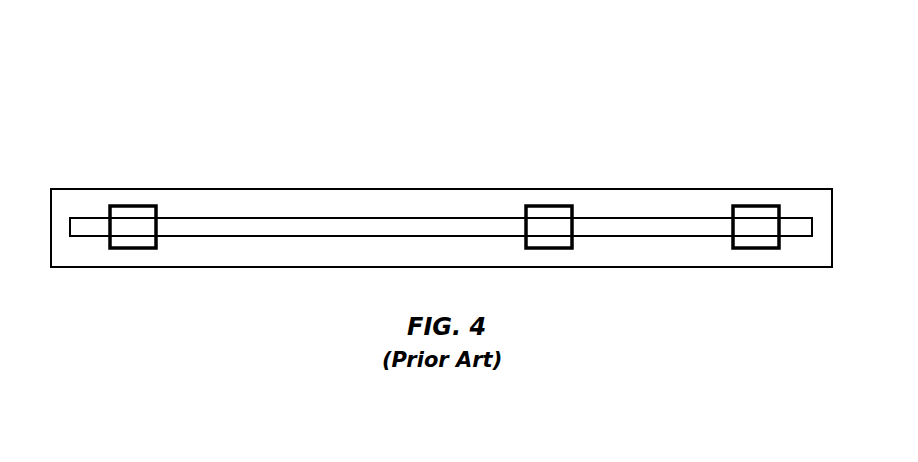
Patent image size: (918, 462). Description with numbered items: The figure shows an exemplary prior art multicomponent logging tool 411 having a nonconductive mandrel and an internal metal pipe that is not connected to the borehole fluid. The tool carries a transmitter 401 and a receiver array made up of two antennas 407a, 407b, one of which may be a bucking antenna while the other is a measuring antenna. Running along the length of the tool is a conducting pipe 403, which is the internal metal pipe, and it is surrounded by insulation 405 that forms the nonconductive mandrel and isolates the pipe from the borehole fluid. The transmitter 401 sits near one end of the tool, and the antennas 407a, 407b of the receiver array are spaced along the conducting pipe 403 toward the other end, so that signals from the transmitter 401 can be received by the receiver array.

The multicomponent logging tool 411 is at (128, 89).
The transmitter 401 is at (132, 206).
The conducting pipe 403 is at (292, 217).
The insulation 405 is at (388, 202).
The antenna 407a is at (537, 206).
The antenna 407b is at (747, 206).